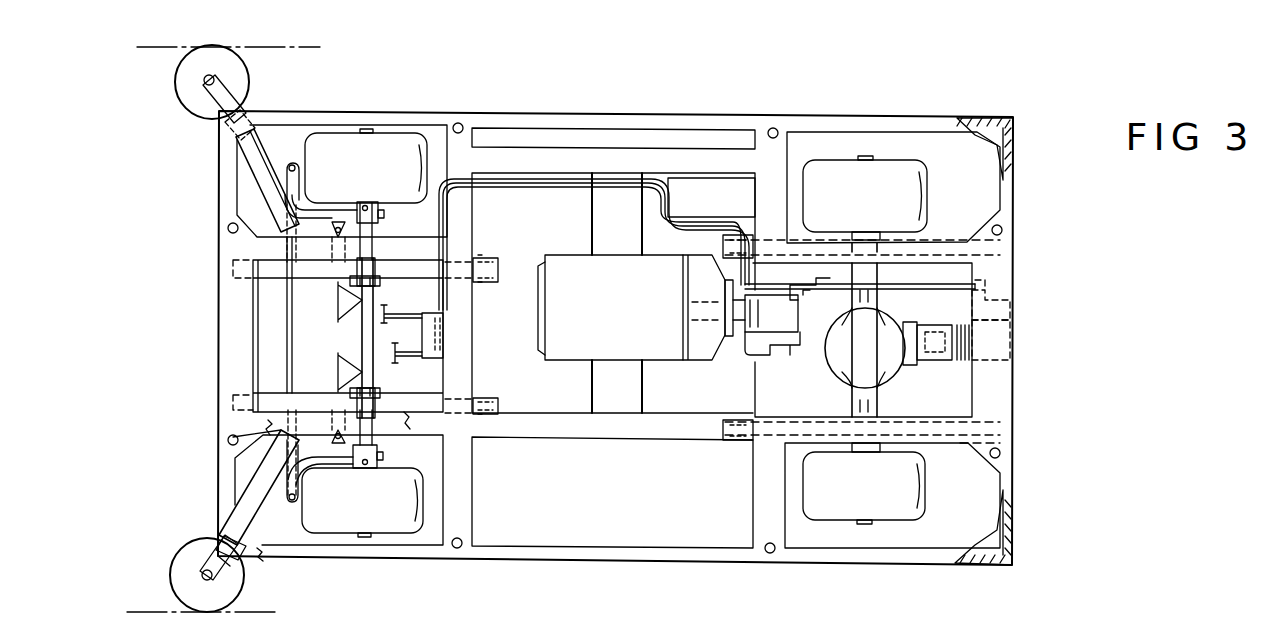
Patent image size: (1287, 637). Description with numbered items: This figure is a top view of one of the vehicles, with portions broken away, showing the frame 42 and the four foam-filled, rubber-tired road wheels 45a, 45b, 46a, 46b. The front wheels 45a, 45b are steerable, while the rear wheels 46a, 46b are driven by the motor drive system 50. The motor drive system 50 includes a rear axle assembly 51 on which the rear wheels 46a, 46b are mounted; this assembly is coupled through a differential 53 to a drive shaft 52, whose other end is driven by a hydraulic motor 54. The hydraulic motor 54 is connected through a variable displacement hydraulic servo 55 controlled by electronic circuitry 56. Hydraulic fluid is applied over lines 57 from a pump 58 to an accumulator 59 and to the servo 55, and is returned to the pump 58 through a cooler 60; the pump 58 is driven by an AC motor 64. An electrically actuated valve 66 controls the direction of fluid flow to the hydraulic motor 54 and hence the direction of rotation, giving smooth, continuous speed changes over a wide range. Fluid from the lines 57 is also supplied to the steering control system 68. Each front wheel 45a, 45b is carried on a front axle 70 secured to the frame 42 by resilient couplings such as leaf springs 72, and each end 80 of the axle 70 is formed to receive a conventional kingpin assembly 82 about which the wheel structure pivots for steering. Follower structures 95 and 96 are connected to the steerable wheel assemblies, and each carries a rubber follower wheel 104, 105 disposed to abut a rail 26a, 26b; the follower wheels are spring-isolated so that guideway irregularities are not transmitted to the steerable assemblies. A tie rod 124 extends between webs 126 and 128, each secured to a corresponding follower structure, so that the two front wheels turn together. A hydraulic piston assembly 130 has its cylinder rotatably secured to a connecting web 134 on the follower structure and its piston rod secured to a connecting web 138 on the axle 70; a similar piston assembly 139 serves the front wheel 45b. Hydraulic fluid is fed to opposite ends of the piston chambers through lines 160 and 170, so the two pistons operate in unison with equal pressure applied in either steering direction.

The rail 26a is at (295, 46).
The rail 26b is at (284, 612).
The frame 42 is at (698, 114).
The front wheel 45a is at (366, 170).
The front wheel 45b is at (361, 517).
The rear wheel 46a is at (852, 204).
The rear wheel 46b is at (857, 500).
The motor drive system 50 is at (706, 395).
The rear axle assembly 51 is at (878, 302).
The drive shaft 52 is at (938, 358).
The differential 53 is at (848, 370).
The hydraulic motor 54 is at (962, 362).
The variable displacement hydraulic servo 55 is at (1000, 357).
The electronic circuitry 56 is at (580, 516).
The lines 57 is at (953, 287).
The pump 58 is at (772, 316).
The accumulator 59 is at (816, 282).
The cooler 60 is at (700, 205).
The AC motor 64 is at (612, 318).
The electrically actuated valve 66 is at (1002, 310).
The steering control system 68 is at (445, 340).
The front axle 70 is at (376, 331).
The leaf springs 72 is at (438, 278).
The end of axle 80 is at (383, 215).
The kingpin assembly 82 is at (370, 207).
The follower structure 95 is at (250, 471).
The follower structure 96 is at (250, 181).
The follower wheel 104 is at (184, 92).
The rear caster wheel 105 is at (182, 575).
The tie rod 124 is at (287, 305).
The web 126 is at (296, 168).
The web 128 is at (288, 502).
The hydraulic piston assembly 130 is at (333, 244).
The connecting web 134 is at (338, 228).
The connecting web 138 is at (350, 312).
The piston assembly 139 is at (328, 423).
The line 160 is at (388, 313).
The line 170 is at (421, 376).